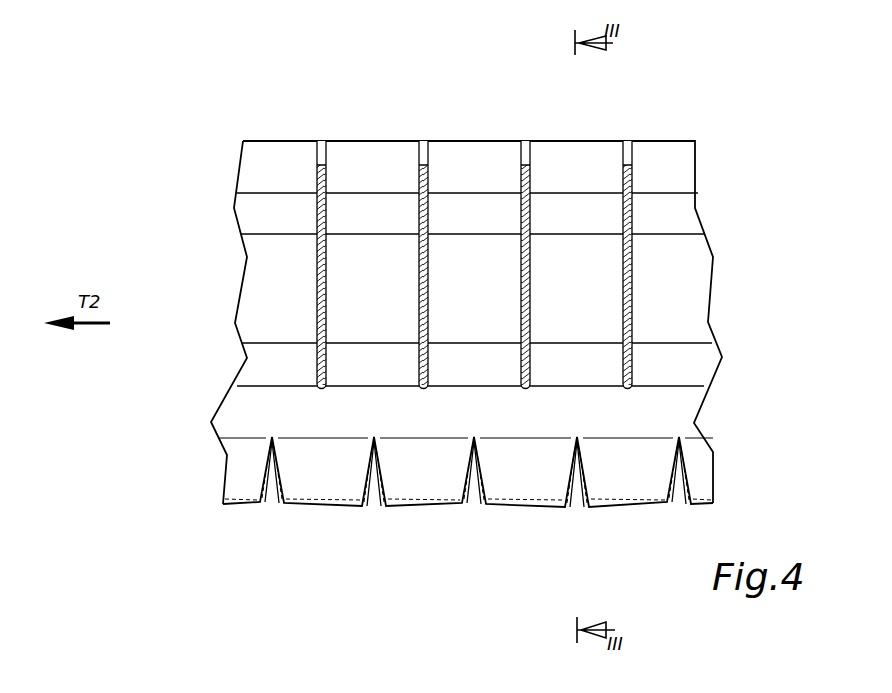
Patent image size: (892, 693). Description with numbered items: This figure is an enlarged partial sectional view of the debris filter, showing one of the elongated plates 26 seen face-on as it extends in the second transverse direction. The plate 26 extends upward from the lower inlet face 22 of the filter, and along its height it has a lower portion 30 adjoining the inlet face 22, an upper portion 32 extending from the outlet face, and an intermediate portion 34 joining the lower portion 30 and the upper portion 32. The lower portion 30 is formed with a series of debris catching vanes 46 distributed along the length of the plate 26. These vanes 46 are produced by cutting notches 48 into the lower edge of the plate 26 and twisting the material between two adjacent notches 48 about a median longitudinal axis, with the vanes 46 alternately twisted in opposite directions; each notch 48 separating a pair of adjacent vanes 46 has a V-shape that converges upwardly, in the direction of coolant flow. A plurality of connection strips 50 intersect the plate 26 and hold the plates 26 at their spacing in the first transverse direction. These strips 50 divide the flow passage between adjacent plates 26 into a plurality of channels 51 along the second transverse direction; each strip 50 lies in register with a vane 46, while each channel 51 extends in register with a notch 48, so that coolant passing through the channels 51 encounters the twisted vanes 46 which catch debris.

The lower inlet face 22 is at (248, 534).
The plate 26 is at (688, 273).
The lower portion 30 is at (236, 416).
The upper portion 32 is at (262, 173).
The intermediate portion 34 is at (262, 295).
The debris catching vane 46 is at (412, 483).
The notch 48 is at (374, 508).
The connection strip 50 is at (419, 185).
The channel 51 is at (474, 275).